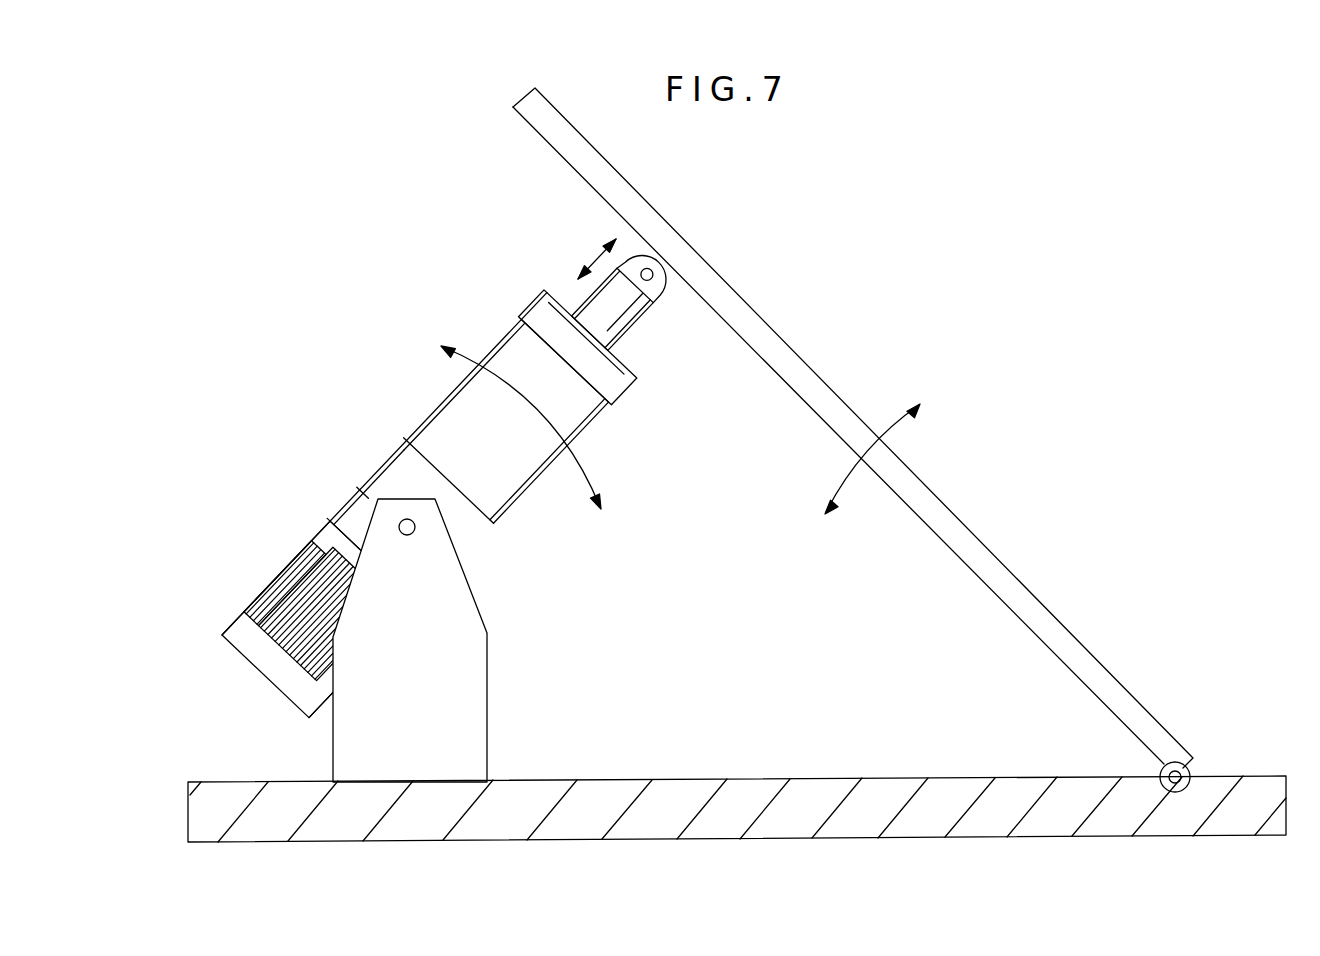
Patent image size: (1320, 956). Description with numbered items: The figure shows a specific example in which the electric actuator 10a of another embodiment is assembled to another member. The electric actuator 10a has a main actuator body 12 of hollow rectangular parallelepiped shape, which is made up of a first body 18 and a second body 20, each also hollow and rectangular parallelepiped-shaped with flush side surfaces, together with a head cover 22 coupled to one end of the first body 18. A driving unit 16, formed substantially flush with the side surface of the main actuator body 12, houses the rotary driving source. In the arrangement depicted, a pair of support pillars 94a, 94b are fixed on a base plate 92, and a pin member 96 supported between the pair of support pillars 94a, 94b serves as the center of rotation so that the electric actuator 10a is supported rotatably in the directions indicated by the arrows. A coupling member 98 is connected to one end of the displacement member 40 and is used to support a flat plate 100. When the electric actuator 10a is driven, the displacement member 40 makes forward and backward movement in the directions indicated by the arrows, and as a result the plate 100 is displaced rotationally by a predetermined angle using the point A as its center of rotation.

The electric actuator 10a is at (372, 433).
The main actuator body 12 is at (430, 505).
The driving unit 16 is at (277, 566).
The first body 18 is at (580, 413).
The second body 20 is at (357, 489).
The head cover 22 is at (552, 312).
The displacement member 40 is at (635, 320).
The base plate 92 is at (666, 797).
The support pillar 94a is at (486, 640).
The support pillar 94b is at (455, 618).
The pin member 96 is at (415, 527).
The coupling member 98 is at (662, 283).
The flat plate 100 is at (735, 300).
The point A is at (1182, 760).